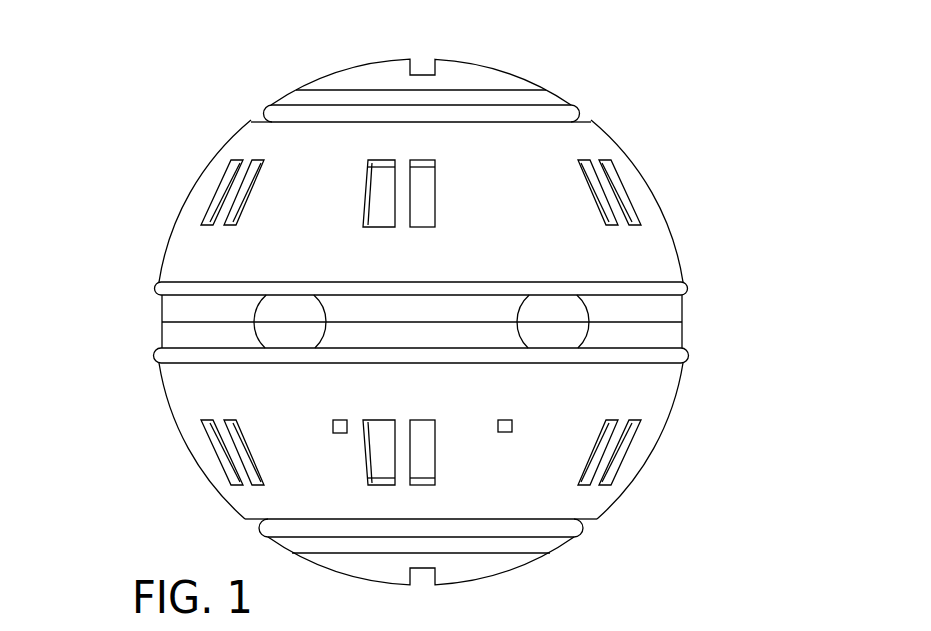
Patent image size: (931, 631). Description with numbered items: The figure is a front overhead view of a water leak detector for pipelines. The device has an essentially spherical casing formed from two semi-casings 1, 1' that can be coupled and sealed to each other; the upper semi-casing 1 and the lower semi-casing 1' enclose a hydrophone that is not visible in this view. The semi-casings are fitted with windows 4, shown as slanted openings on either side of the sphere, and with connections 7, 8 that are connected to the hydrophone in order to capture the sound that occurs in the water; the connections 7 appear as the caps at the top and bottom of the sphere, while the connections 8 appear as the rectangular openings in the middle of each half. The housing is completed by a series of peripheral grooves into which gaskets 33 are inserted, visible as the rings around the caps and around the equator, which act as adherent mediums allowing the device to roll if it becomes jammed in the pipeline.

The semi-casing 1 is at (444, 201).
The semi-casing 1' is at (440, 441).
The connection 7 is at (467, 73).
The gasket 33 is at (578, 110).
The window 4 is at (617, 172).
The connection 8 is at (380, 183).